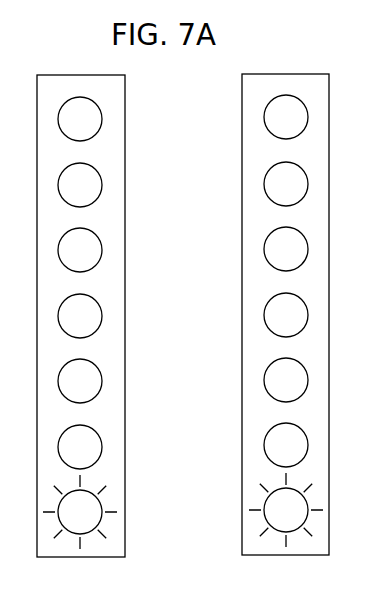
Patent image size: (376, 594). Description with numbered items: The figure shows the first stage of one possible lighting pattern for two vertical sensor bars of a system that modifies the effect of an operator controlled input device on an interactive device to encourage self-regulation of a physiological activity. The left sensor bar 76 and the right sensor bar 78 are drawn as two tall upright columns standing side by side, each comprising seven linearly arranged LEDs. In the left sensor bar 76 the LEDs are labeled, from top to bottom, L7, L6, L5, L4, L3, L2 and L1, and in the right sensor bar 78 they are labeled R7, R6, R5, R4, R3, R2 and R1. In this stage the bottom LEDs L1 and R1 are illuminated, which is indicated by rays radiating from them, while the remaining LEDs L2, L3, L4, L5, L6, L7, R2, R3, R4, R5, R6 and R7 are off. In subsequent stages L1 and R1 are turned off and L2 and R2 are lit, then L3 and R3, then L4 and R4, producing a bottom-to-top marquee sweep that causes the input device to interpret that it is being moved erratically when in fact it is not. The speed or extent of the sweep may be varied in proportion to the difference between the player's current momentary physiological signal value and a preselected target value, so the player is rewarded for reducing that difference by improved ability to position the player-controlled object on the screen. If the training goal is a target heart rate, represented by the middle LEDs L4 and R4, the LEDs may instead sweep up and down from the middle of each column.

The left sensor bar 76 is at (126, 316).
The right sensor bar 78 is at (237, 314).
The LED L1 is at (80, 512).
The LED L2 is at (80, 447).
The LED L3 is at (80, 381).
The LED L4 is at (80, 316).
The LED L5 is at (80, 250).
The LED L6 is at (80, 185).
The LED L7 is at (80, 119).
The LED R1 is at (286, 510).
The LED R2 is at (286, 445).
The LED R3 is at (286, 380).
The LED R4 is at (286, 315).
The LED R5 is at (286, 249).
The LED R6 is at (286, 184).
The LED R7 is at (286, 117).